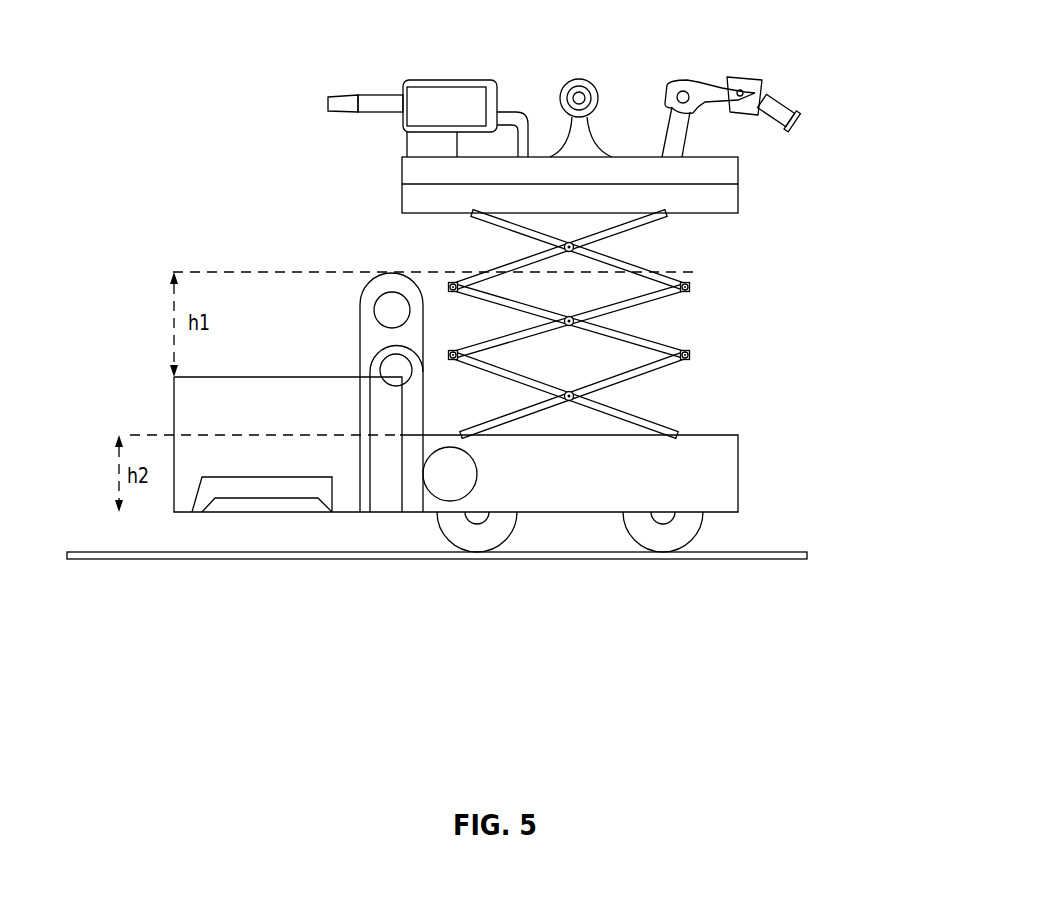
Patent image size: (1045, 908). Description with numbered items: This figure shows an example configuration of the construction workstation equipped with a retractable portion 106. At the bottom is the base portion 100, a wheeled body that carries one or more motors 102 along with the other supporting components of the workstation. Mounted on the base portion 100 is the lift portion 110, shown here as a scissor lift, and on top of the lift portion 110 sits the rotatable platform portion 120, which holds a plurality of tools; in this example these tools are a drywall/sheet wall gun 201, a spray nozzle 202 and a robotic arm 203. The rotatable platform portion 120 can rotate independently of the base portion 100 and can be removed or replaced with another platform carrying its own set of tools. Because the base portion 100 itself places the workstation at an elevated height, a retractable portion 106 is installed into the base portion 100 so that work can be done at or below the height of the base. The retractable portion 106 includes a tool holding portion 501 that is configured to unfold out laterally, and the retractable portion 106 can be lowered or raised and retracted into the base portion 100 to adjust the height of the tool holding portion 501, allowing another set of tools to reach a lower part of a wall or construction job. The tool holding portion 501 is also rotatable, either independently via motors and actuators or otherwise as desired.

The base portion 100 is at (733, 447).
The motor 102 is at (478, 463).
The retractable portion 106 is at (172, 443).
The lift portion 110 is at (697, 325).
The rotatable platform portion 120 is at (400, 187).
The drywall/sheet wall gun 201 is at (448, 80).
The spray nozzle 202 is at (567, 83).
The robotic arm 203 is at (732, 75).
The tool holding portion 501 is at (240, 513).